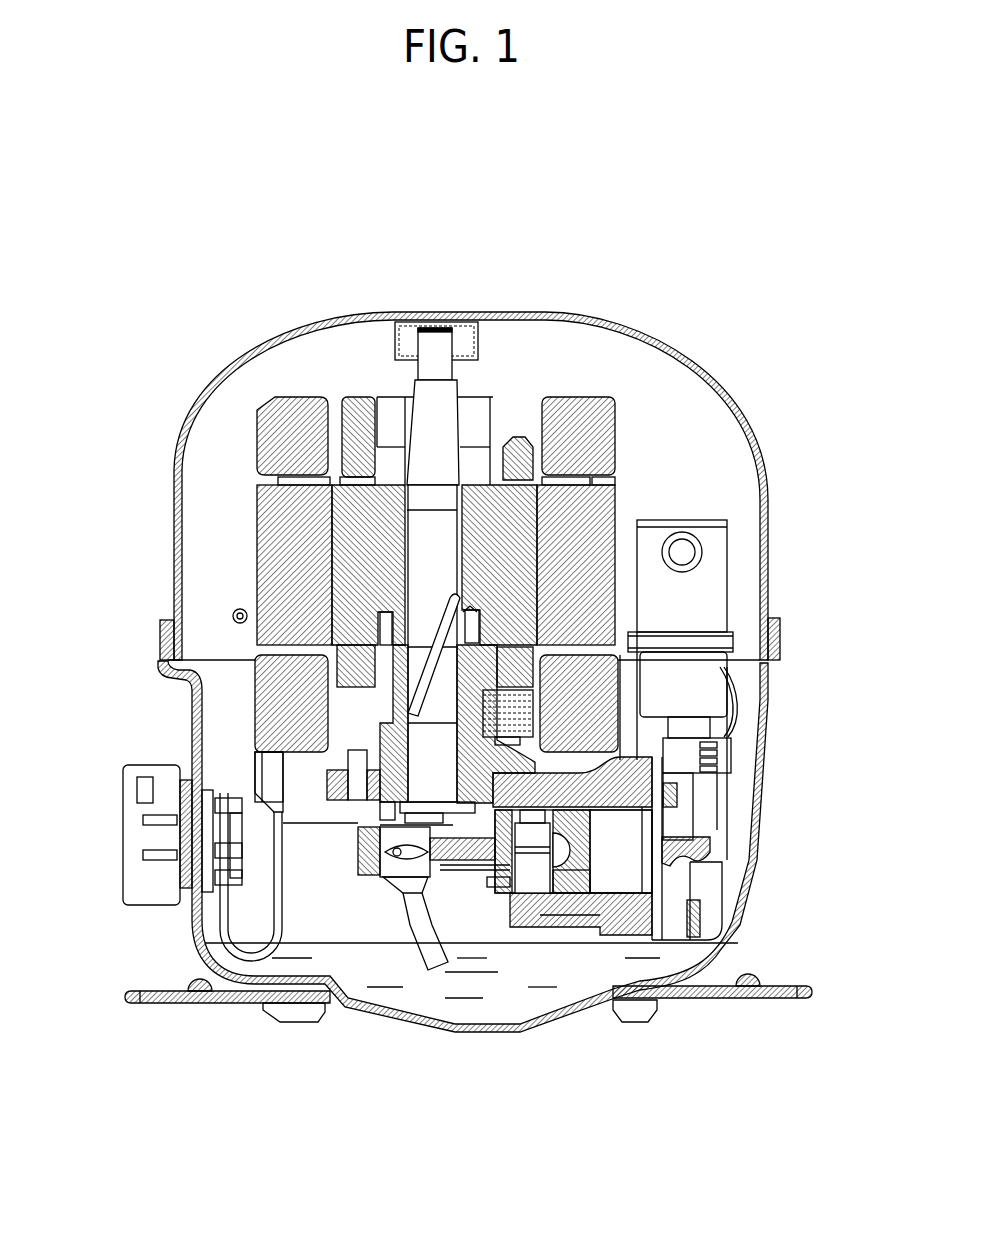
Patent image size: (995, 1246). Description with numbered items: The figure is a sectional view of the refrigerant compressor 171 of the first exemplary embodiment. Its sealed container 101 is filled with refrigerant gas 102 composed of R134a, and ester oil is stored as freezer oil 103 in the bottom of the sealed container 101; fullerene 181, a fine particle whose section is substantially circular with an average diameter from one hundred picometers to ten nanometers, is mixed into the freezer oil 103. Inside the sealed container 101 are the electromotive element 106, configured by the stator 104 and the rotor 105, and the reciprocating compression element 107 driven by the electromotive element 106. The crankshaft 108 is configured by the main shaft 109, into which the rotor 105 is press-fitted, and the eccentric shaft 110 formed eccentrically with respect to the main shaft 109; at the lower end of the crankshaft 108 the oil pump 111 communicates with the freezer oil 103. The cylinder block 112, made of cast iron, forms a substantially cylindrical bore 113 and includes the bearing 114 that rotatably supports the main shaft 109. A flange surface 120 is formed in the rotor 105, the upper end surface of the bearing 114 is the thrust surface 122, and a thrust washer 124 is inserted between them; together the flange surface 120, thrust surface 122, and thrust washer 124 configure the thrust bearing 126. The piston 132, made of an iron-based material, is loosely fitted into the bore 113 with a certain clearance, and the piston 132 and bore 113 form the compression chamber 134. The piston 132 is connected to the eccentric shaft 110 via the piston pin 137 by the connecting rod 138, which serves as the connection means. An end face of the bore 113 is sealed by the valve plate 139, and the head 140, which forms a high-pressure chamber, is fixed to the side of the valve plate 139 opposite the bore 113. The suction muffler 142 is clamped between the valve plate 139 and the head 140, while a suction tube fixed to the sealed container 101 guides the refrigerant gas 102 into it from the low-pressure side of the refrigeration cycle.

The sealed container 101 is at (713, 392).
The refrigerant gas 102 is at (656, 398).
The freezer oil 103 is at (453, 987).
The stator 104 is at (262, 510).
The rotor 105 is at (367, 513).
The electromotive element 106 is at (280, 453).
The reciprocating compression element 107 is at (600, 940).
The crankshaft 108 is at (430, 482).
The main shaft 109 is at (437, 768).
The eccentric shaft 110 is at (403, 835).
The oil pump 111 is at (425, 905).
The cylinder block 112 is at (583, 900).
The bore 113 is at (640, 932).
The bearing 114 is at (390, 767).
The flange surface 120 is at (468, 612).
The thrust surface 122 is at (392, 616).
The thrust washer 124 is at (405, 612).
The thrust bearing 126 is at (470, 613).
The piston 132 is at (557, 880).
The compression chamber 134 is at (607, 875).
The piston pin 137 is at (535, 870).
The connecting rod 138 is at (410, 897).
The valve plate 139 is at (668, 850).
The head 140 is at (703, 873).
The suction muffler 142 is at (707, 595).
The refrigerant compressor 171 is at (283, 318).
The fullerene 181 is at (460, 987).